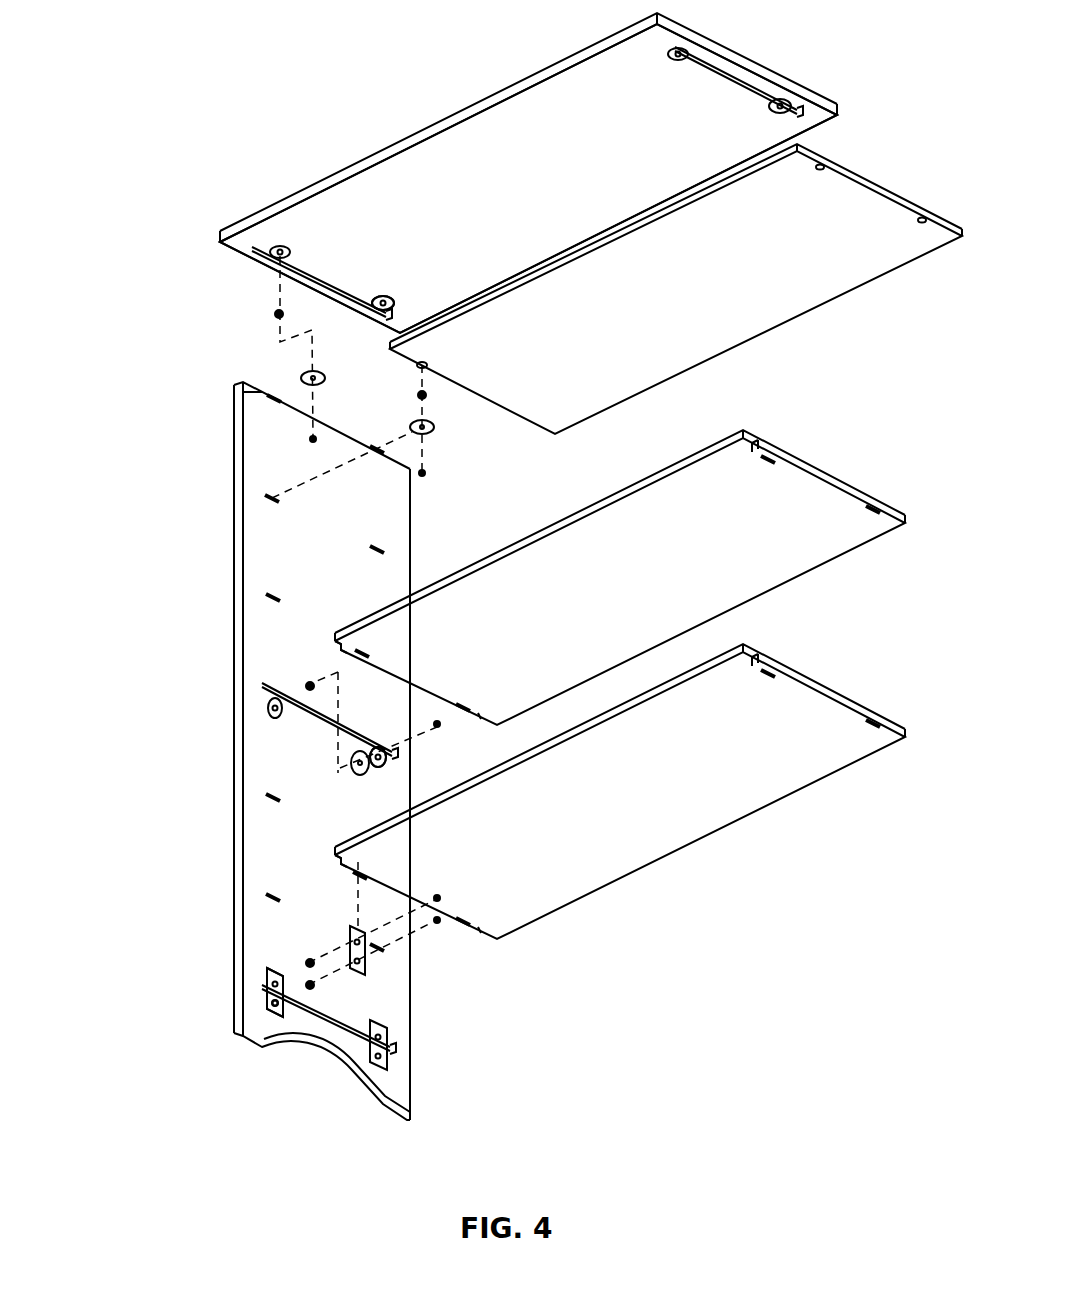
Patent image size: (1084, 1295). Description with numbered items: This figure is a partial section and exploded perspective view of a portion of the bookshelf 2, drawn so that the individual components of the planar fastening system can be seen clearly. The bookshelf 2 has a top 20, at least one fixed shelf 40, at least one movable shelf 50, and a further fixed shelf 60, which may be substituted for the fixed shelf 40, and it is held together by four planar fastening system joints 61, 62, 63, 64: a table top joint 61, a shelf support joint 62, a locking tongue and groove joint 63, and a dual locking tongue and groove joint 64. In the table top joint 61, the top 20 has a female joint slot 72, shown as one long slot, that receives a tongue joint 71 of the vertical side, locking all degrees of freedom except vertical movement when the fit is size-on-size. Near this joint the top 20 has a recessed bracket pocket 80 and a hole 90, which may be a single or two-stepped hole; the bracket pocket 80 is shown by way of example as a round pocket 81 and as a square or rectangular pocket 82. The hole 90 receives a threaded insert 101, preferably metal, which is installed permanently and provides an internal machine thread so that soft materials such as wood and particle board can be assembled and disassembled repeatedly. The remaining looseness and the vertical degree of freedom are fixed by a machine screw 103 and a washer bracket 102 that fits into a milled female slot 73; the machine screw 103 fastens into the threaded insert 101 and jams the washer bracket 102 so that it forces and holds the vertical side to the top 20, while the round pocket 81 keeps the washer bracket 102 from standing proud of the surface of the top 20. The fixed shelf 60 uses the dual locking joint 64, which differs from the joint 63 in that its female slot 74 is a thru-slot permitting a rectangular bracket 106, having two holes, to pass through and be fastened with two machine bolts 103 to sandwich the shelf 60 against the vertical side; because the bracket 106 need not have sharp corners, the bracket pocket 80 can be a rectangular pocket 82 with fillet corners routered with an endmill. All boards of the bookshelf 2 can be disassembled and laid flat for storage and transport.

The bookshelf 2 is at (410, 123).
The top 20 is at (548, 92).
The fixed shelf 40 is at (742, 567).
The movable shelf 50 is at (750, 332).
The fixed shelf 60 is at (760, 789).
The table top joint 61 is at (116, 35).
The shelf support joint 62 is at (116, 392).
The locking tongue and groove joint 63 is at (116, 573).
The dual locking tongue and groove joint 64 is at (116, 880).
The tongue joint 71 is at (255, 381).
The female joint slot 72 is at (247, 247).
The female slot 73 is at (250, 396).
The female slot 74 is at (460, 926).
The bracket pocket 80 is at (274, 583).
The round pocket 81 is at (265, 243).
The square/rectangular pocket 82 is at (267, 1020).
The hole 90 is at (284, 240).
The threaded insert 101 is at (273, 312).
The washer bracket 102 is at (297, 377).
The machine screw 103 is at (300, 437).
The bracket 106 is at (343, 928).